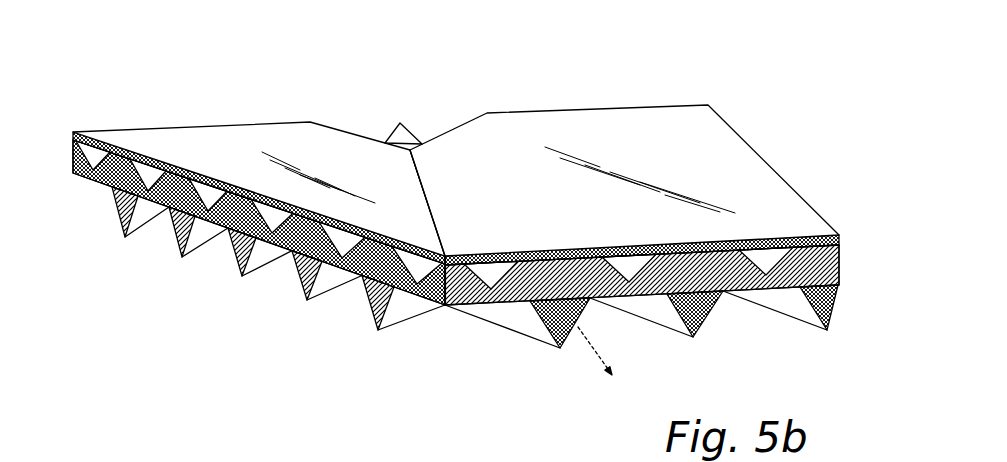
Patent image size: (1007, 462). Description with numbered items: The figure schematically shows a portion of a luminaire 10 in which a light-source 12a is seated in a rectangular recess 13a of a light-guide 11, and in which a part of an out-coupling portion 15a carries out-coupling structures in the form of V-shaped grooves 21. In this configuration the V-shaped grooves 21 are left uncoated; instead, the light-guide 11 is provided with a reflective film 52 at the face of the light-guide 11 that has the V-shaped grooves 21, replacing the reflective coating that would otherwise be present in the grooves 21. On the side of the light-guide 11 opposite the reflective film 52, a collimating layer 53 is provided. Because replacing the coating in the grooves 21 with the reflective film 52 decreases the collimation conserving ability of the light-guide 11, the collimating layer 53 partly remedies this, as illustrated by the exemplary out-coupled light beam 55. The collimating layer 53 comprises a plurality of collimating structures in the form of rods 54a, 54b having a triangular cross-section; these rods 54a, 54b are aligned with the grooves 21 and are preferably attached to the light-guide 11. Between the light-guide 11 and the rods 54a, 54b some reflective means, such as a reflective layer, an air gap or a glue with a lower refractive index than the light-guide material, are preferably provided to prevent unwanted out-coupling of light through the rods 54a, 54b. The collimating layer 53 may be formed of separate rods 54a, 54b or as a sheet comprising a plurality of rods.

The luminaire 10 is at (749, 63).
The light-guide 11 is at (828, 266).
The light-source 12a is at (403, 136).
The rectangular recess 13a is at (447, 118).
The out-coupling portion 15a is at (546, 134).
The V-shaped grooves 21 is at (764, 257).
The reflective film 52 is at (638, 122).
The collimating layer 53 is at (838, 329).
The rod 54a is at (560, 348).
The rod 54b is at (693, 337).
The out-coupled light beam 55 is at (602, 360).